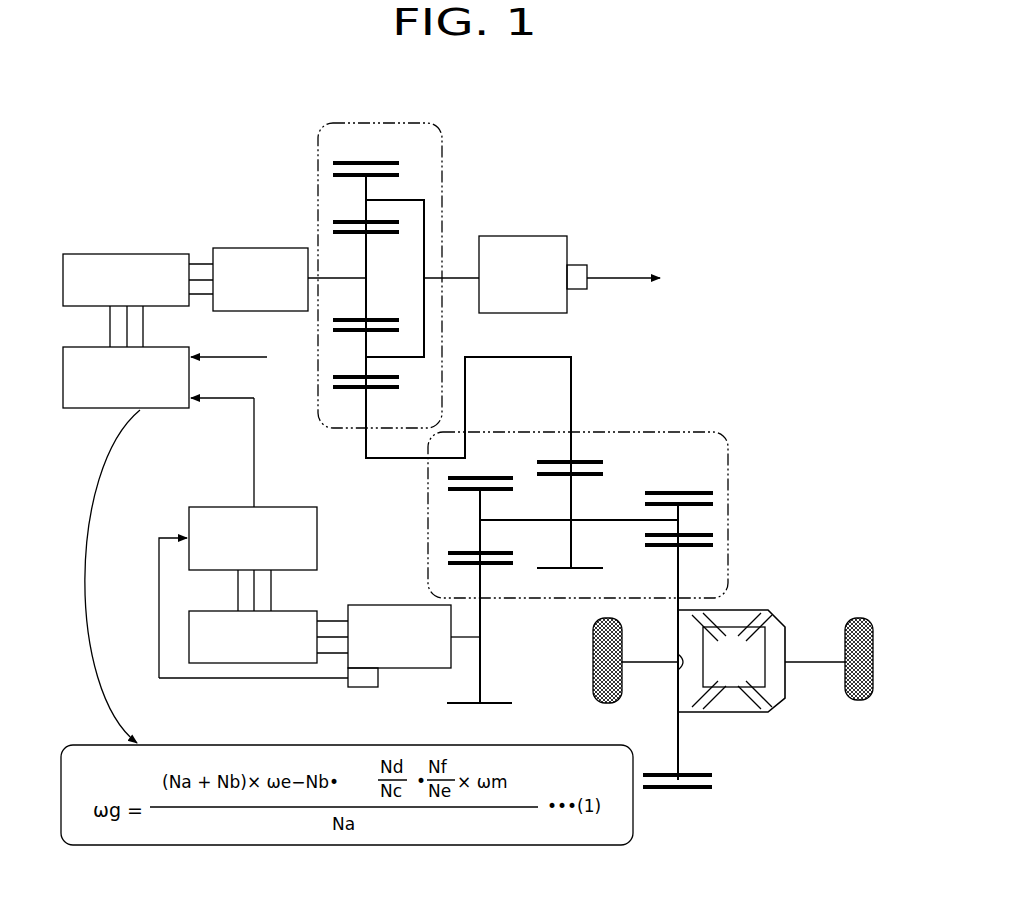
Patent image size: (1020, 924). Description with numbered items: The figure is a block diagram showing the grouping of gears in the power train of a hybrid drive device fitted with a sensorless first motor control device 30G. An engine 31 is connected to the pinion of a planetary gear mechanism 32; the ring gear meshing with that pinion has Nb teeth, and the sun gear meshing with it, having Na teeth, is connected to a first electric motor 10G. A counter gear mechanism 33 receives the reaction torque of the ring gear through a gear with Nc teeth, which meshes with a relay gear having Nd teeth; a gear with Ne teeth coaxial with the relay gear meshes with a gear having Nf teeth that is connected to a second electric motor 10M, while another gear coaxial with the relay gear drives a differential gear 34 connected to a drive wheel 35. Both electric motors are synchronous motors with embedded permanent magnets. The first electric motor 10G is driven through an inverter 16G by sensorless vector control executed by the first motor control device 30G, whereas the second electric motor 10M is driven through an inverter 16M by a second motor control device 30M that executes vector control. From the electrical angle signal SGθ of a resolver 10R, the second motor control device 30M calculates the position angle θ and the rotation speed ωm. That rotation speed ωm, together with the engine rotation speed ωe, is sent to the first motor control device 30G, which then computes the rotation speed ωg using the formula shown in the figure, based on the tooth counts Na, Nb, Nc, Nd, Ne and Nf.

The inverter 16G is at (148, 253).
The first electric motor 10G is at (272, 247).
The first motor control device 30G is at (167, 408).
The planetary gear mechanism 32 is at (438, 137).
The engine 31 is at (527, 237).
The counter gear mechanism 33 is at (626, 590).
The second motor control device 30M is at (252, 503).
The inverter 16M is at (228, 608).
The second electric motor 10M is at (383, 603).
The resolver 10R is at (363, 683).
The differential gear 34 is at (728, 607).
The drive wheel 35 is at (857, 617).